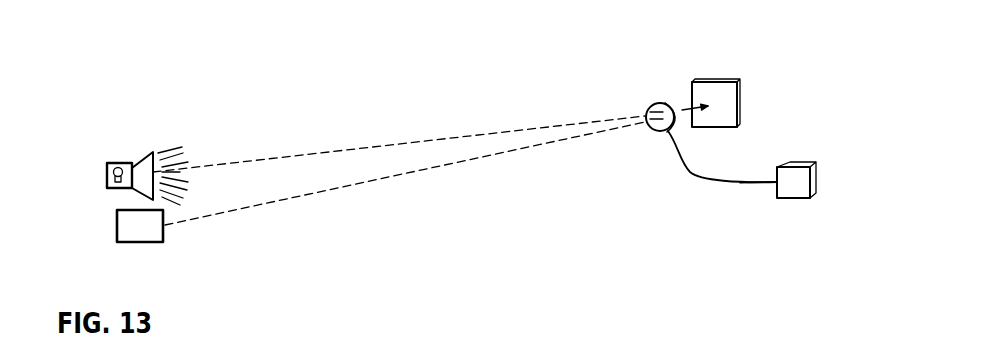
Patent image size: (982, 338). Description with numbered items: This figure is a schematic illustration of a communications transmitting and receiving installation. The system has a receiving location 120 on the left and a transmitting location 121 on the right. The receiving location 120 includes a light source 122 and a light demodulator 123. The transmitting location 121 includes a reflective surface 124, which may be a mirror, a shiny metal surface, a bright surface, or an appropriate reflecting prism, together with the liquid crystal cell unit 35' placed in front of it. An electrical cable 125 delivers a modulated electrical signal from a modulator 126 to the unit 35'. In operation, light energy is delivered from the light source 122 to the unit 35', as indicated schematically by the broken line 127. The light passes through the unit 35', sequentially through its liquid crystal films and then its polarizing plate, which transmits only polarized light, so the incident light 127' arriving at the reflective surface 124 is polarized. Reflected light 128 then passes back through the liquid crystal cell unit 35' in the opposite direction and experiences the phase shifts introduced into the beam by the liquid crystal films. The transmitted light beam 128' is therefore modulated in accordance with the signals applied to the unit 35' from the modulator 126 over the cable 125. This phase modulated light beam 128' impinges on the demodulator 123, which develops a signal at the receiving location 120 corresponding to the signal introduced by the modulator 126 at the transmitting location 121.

The receiving location 120 is at (170, 238).
The transmitting location 121 is at (687, 180).
The light source 122 is at (132, 163).
The light demodulator 123 is at (135, 238).
The reflective surface 124 is at (712, 95).
The electrical cable 125 is at (750, 184).
The modulator 126 is at (800, 163).
The broken line 127 is at (399, 138).
The incident light 127' is at (688, 75).
The reflected light 128 is at (712, 137).
The transmitted light beam 128' is at (405, 173).
The liquid crystal cell unit 35' is at (647, 98).